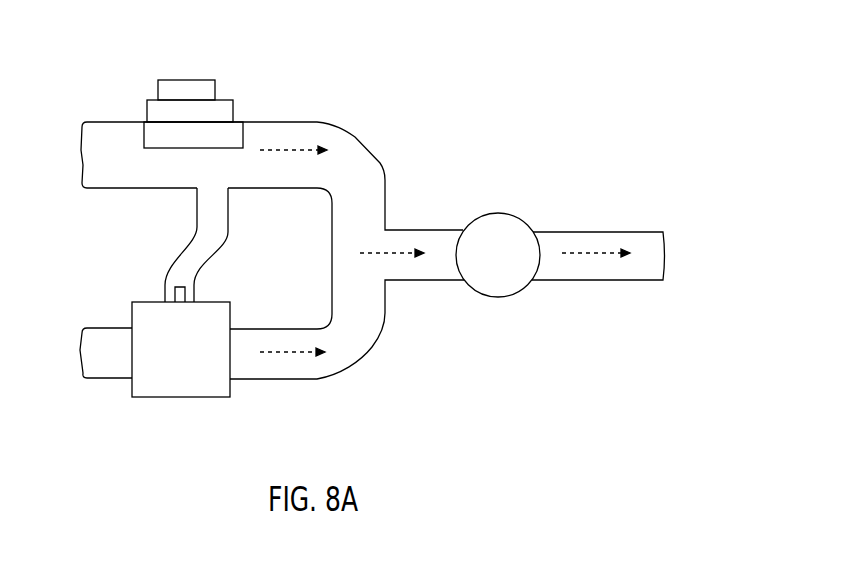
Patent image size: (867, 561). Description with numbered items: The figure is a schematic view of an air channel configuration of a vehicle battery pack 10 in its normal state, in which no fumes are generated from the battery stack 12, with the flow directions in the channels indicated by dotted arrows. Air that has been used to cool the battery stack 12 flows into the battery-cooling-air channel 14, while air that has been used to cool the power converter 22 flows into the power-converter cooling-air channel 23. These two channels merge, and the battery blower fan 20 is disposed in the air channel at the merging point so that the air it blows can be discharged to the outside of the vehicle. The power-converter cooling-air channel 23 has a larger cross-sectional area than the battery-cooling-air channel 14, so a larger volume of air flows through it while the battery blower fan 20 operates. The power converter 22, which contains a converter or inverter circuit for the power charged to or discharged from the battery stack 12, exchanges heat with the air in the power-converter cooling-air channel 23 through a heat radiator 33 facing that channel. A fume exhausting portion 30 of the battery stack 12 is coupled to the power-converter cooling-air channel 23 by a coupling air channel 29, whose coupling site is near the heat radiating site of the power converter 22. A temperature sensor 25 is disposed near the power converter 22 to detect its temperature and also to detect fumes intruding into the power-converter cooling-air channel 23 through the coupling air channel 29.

The vehicle battery pack 10 is at (248, 77).
The battery stack 12 is at (188, 397).
The battery-cooling-air channel 14 is at (347, 375).
The battery blower fan 20 is at (496, 213).
The power converter 22 is at (188, 80).
The power-converter cooling-air channel 23 is at (351, 132).
The temperature sensor 25 is at (252, 120).
The coupling air channel 29 is at (196, 222).
The fume exhausting portion 30 is at (165, 290).
The heat radiator 33 is at (143, 100).